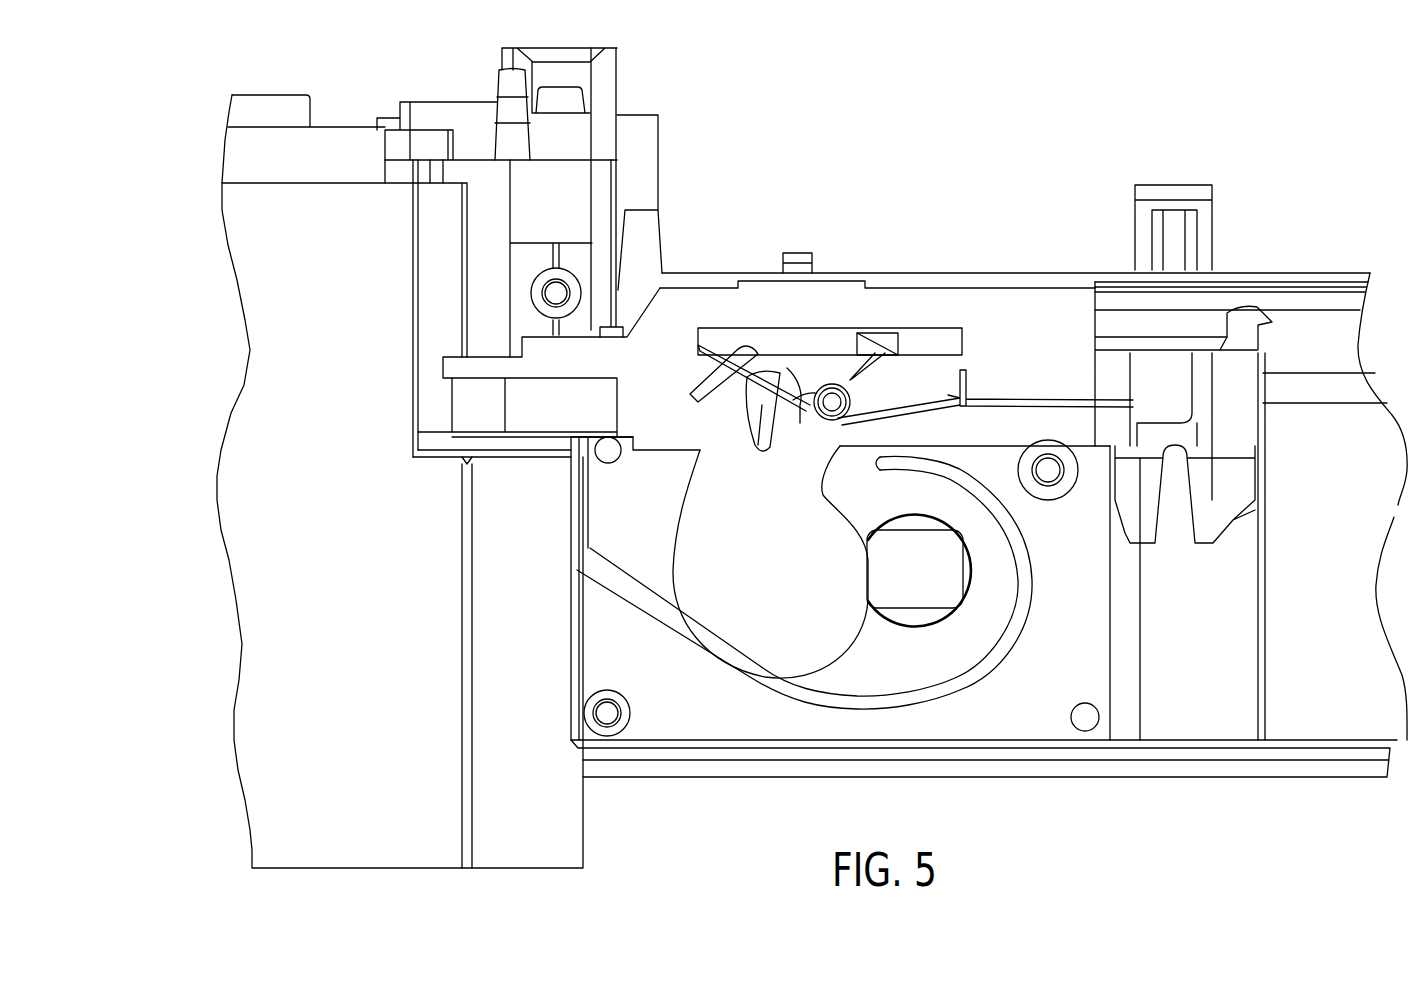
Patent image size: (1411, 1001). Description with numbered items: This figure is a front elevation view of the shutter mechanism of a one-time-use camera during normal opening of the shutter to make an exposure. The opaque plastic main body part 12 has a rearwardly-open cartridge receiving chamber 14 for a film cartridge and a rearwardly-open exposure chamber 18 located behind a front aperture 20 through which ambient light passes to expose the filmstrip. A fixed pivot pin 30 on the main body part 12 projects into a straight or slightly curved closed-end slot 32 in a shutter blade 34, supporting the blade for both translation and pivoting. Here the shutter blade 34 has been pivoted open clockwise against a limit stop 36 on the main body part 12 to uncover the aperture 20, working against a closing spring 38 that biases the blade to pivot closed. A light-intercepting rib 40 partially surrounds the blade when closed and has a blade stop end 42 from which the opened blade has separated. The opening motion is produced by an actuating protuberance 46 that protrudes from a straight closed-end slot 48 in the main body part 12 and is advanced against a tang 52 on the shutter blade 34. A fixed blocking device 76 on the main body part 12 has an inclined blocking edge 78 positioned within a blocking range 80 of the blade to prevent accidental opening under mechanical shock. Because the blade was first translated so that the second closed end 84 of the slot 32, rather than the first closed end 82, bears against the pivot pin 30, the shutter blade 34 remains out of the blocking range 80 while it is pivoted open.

The main body part 12 is at (205, 478).
The cartridge receiving chamber 14 is at (250, 556).
The exposure chamber 18 is at (862, 683).
The front aperture 20 is at (938, 590).
The pivot pin 30 is at (823, 383).
The closed-end slot 32 is at (830, 387).
The shutter blade 34 is at (742, 657).
The limit stop 36 is at (610, 456).
The closing spring 38 is at (700, 348).
The light-intercepting rib 40 is at (1017, 613).
The blade stop end 42 is at (880, 460).
The actuating protuberance 46 is at (880, 340).
The closed-end slot 48 is at (940, 335).
The tang 52 is at (866, 368).
The blocking device 76 is at (760, 390).
The inclined blocking edge 78 is at (757, 383).
The blocking range 80 is at (760, 405).
The first closed end 82 is at (867, 400).
The second closed end 84 is at (802, 420).